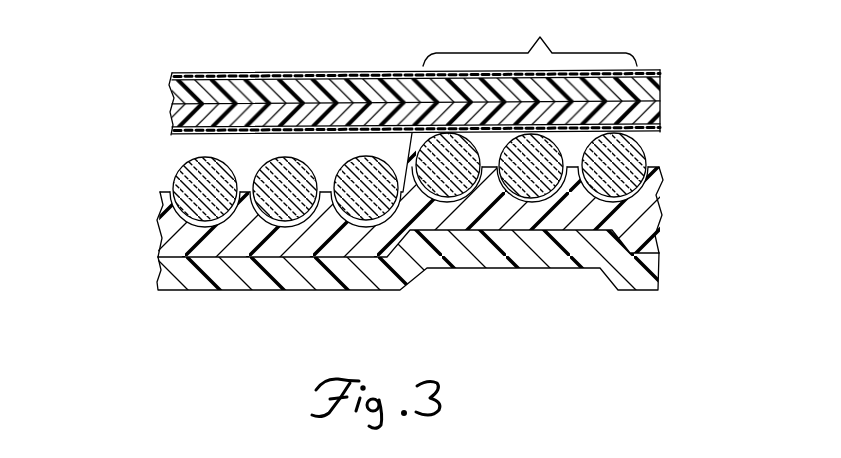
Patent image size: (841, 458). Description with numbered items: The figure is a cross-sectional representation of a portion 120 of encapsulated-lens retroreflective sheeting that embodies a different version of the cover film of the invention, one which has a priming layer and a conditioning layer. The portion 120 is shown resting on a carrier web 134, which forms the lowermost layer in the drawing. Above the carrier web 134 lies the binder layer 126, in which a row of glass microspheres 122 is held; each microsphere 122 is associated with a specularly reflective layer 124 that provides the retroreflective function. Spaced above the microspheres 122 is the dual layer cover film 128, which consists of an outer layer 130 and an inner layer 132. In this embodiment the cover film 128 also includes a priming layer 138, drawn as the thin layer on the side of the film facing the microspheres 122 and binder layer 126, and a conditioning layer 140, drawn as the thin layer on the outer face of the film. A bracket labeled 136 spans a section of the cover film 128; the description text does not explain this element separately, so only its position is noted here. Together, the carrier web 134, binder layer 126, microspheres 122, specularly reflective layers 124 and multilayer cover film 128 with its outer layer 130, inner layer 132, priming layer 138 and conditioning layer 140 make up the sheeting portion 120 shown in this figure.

The portion of retroreflective sheeting 120 is at (391, 238).
The microspheres 122 is at (287, 158).
The specularly reflective layers 124 is at (368, 224).
The binder layer 126 is at (650, 217).
The dual layer cover film 128 is at (420, 90).
The outer layer 130 is at (256, 88).
The inner layer 132 is at (658, 117).
The carrier web 134 is at (270, 283).
The cover section 136 is at (530, 33).
The priming layer 138 is at (185, 134).
The conditioning layer 140 is at (192, 74).